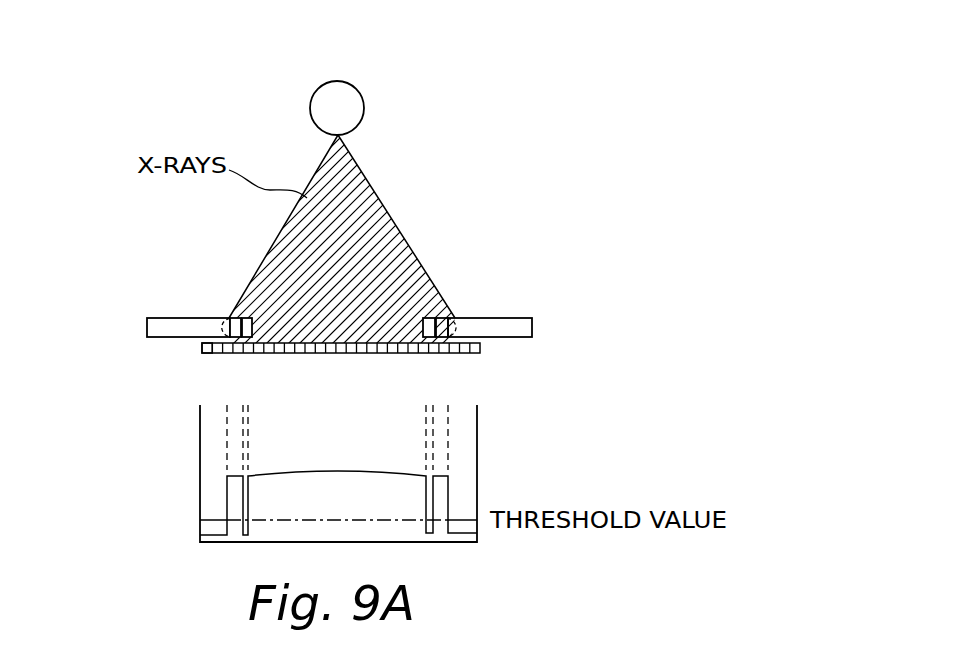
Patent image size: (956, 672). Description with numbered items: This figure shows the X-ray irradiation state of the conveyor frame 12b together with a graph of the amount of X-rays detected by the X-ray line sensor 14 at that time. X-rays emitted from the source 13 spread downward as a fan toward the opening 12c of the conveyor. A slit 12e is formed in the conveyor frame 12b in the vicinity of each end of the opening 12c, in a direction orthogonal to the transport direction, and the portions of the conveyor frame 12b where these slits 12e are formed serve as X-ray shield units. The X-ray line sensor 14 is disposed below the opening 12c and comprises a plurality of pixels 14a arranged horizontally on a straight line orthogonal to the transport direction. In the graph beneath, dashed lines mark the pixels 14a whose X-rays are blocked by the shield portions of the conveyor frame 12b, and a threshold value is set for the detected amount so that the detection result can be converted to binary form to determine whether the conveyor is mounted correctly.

The X-ray source 13 is at (337, 97).
The conveyor frame 12b is at (147, 328).
The slit 12e is at (228, 317).
The opening 12c is at (385, 297).
The X-ray line sensor 14 is at (494, 351).
The pixel 14a is at (202, 347).